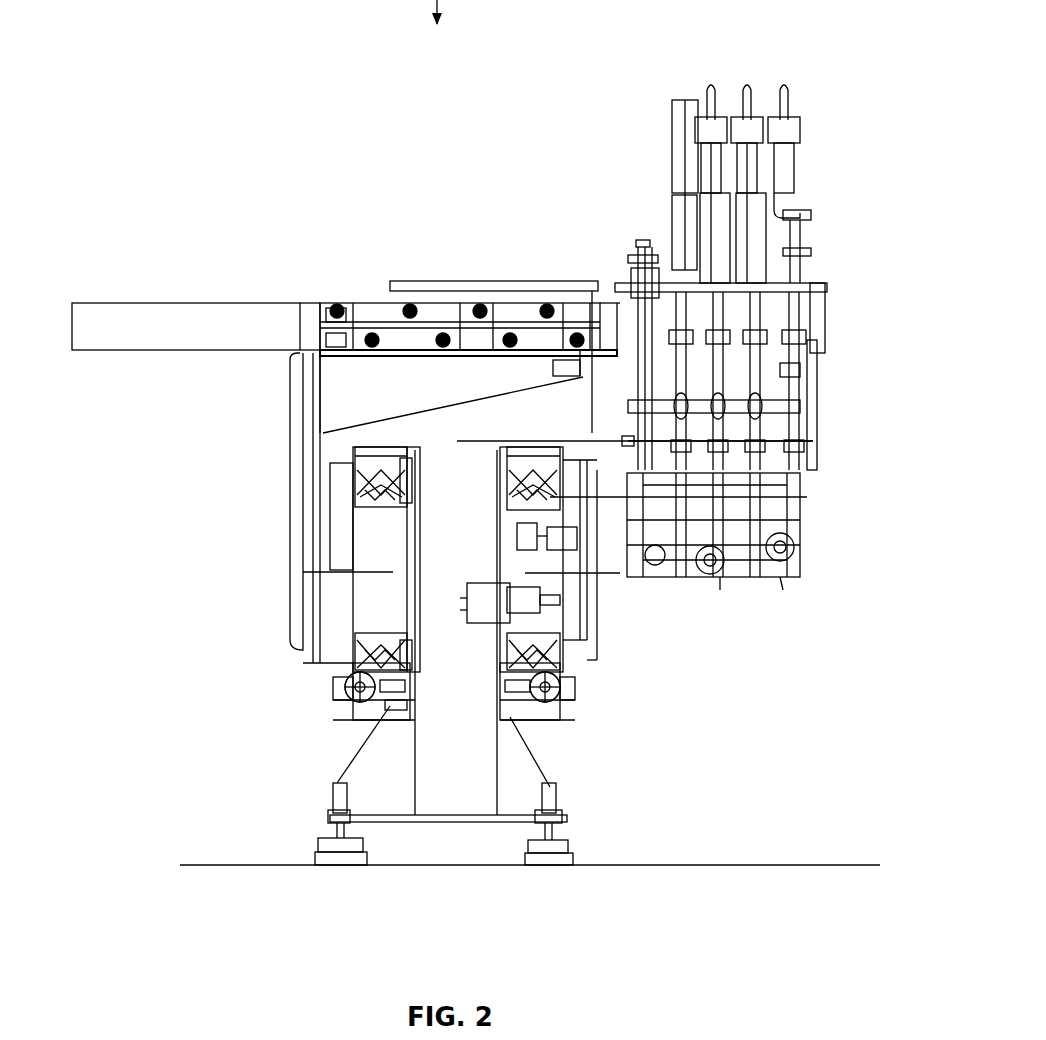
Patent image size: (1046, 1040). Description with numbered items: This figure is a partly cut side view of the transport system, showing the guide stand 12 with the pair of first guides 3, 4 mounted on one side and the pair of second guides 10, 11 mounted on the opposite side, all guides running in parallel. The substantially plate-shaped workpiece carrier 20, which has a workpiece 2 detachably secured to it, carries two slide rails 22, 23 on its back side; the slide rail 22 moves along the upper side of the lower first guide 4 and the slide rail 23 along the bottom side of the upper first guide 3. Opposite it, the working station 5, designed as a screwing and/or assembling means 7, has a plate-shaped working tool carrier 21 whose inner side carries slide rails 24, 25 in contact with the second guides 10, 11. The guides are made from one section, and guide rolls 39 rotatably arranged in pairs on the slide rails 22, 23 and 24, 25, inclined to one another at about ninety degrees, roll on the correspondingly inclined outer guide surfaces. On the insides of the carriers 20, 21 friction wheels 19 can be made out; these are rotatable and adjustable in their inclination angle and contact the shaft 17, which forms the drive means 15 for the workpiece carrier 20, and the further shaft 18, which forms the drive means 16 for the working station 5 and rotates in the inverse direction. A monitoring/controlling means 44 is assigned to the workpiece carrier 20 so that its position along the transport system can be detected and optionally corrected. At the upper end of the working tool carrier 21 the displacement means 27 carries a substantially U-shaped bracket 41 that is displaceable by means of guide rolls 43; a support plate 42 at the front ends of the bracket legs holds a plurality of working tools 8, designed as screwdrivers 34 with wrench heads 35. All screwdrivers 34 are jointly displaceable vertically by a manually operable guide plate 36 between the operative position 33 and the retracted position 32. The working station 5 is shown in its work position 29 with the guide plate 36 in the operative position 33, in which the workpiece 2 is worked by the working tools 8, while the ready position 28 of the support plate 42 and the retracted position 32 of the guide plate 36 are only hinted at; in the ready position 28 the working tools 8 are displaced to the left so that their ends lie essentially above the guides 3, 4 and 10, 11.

The workpiece 2 is at (790, 598).
The upper first guide 3 is at (546, 569).
The lower first guide 4 is at (530, 703).
The working station 5 is at (694, 328).
The screwing and/or assembling means 7 is at (694, 328).
The working tools 8 is at (803, 190).
The second guide 10 is at (415, 526).
The second guide 11 is at (370, 700).
The guide stand 12 is at (473, 793).
The drive means 15 is at (587, 716).
The shaft 17 is at (560, 700).
The drive means 16 is at (318, 716).
The further shaft 18 is at (352, 700).
The friction wheels 19 is at (333, 688).
The workpiece carrier 20 is at (590, 626).
The working tool carrier 21 is at (300, 494).
The slide rail 22 is at (485, 646).
The slide rail 23 is at (583, 610).
The slide rail 24 is at (412, 652).
The slide rail 25 is at (412, 508).
The displacement means 27 is at (290, 284).
The ready position 28 is at (487, 281).
The work position 29 is at (822, 287).
The retracted position 32 is at (800, 372).
The operative position 33 is at (800, 408).
The screwdrivers 34 is at (777, 452).
The wrench heads 35 is at (812, 432).
The guide plate 36 is at (780, 394).
The guide rolls 39 is at (385, 508).
The U-shaped bracket 41 is at (378, 302).
The support plate 42 is at (661, 330).
The guide rolls 43 is at (372, 333).
The monitoring/controlling means 44 is at (488, 632).